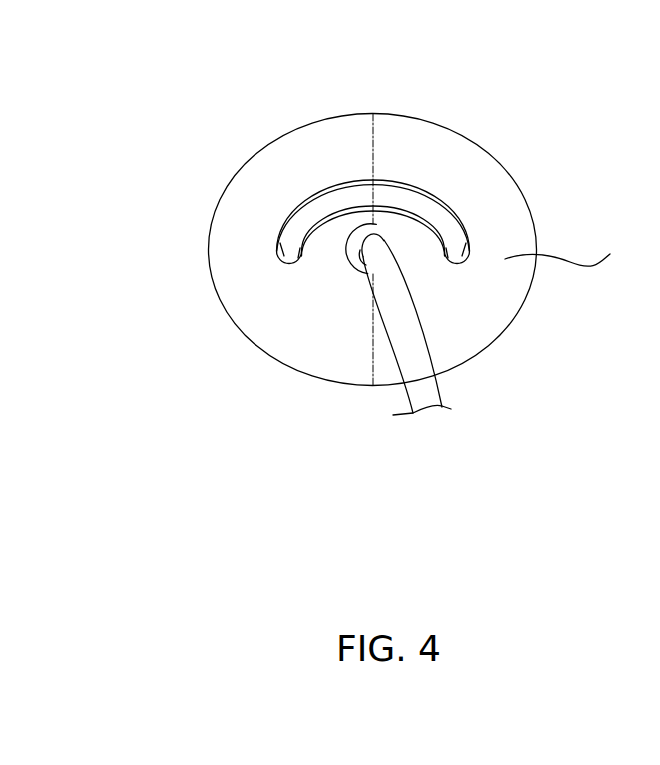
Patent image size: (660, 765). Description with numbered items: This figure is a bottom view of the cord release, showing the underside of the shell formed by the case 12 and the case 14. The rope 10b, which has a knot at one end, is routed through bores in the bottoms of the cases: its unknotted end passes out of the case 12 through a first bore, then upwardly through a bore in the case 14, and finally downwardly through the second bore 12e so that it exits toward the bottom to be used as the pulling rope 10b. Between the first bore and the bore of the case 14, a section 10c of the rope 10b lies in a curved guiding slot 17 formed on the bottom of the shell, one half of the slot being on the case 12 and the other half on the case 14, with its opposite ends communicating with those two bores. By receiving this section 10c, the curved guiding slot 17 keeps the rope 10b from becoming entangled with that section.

The case 12 is at (247, 307).
The case 14 is at (577, 254).
The curved guiding slot 17 is at (390, 178).
The section of the rope 10c is at (435, 223).
The second bore 12e is at (385, 240).
The rope 10b is at (437, 388).